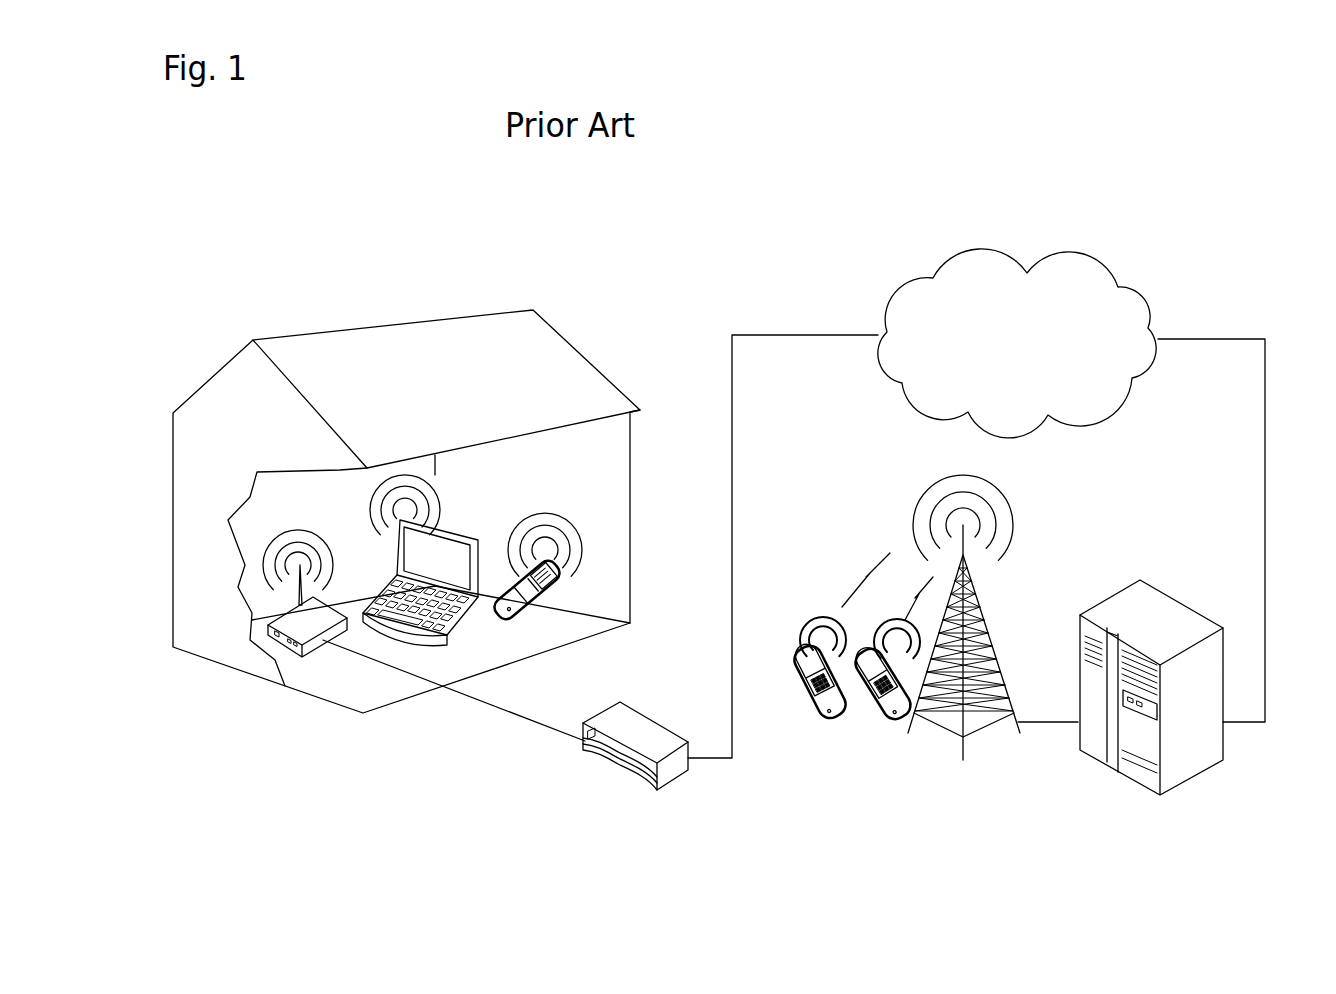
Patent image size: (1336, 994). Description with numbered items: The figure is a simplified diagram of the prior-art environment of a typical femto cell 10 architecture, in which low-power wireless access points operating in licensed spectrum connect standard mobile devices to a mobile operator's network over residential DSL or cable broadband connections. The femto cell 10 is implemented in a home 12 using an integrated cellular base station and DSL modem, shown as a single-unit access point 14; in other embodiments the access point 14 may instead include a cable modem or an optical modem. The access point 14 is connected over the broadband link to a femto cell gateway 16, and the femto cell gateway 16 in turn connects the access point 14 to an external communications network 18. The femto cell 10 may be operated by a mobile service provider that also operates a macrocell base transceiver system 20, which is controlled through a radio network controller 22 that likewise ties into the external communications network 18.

The femto cell 10 is at (767, 192).
The home 12 is at (387, 326).
The single-unit access point 14 is at (283, 646).
The femto cell gateway 16 is at (677, 780).
The external communications network 18 is at (1120, 284).
The macrocell base transceiver system 20 is at (913, 745).
The radio network controller 22 is at (1195, 778).